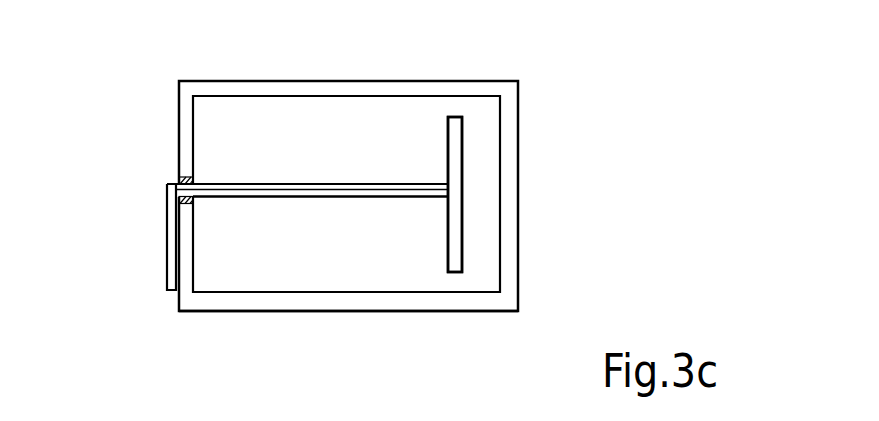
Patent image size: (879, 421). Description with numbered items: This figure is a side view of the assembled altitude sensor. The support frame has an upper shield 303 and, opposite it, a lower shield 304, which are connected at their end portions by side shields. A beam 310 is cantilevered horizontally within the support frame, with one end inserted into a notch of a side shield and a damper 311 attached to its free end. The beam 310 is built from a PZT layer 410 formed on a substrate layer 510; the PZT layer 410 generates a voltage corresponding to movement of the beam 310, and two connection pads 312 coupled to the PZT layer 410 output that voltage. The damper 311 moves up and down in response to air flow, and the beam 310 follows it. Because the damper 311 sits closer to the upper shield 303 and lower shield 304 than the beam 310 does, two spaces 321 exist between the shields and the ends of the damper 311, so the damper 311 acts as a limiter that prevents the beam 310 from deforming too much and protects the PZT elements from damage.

The upper shield 303 is at (248, 80).
The lower shield 304 is at (258, 312).
The beam 310 is at (228, 164).
The damper 311 is at (453, 205).
The connection pads 312 is at (170, 235).
The spaces 321 is at (448, 102).
The PZT layer 410 is at (301, 187).
The substrate layer 510 is at (363, 193).